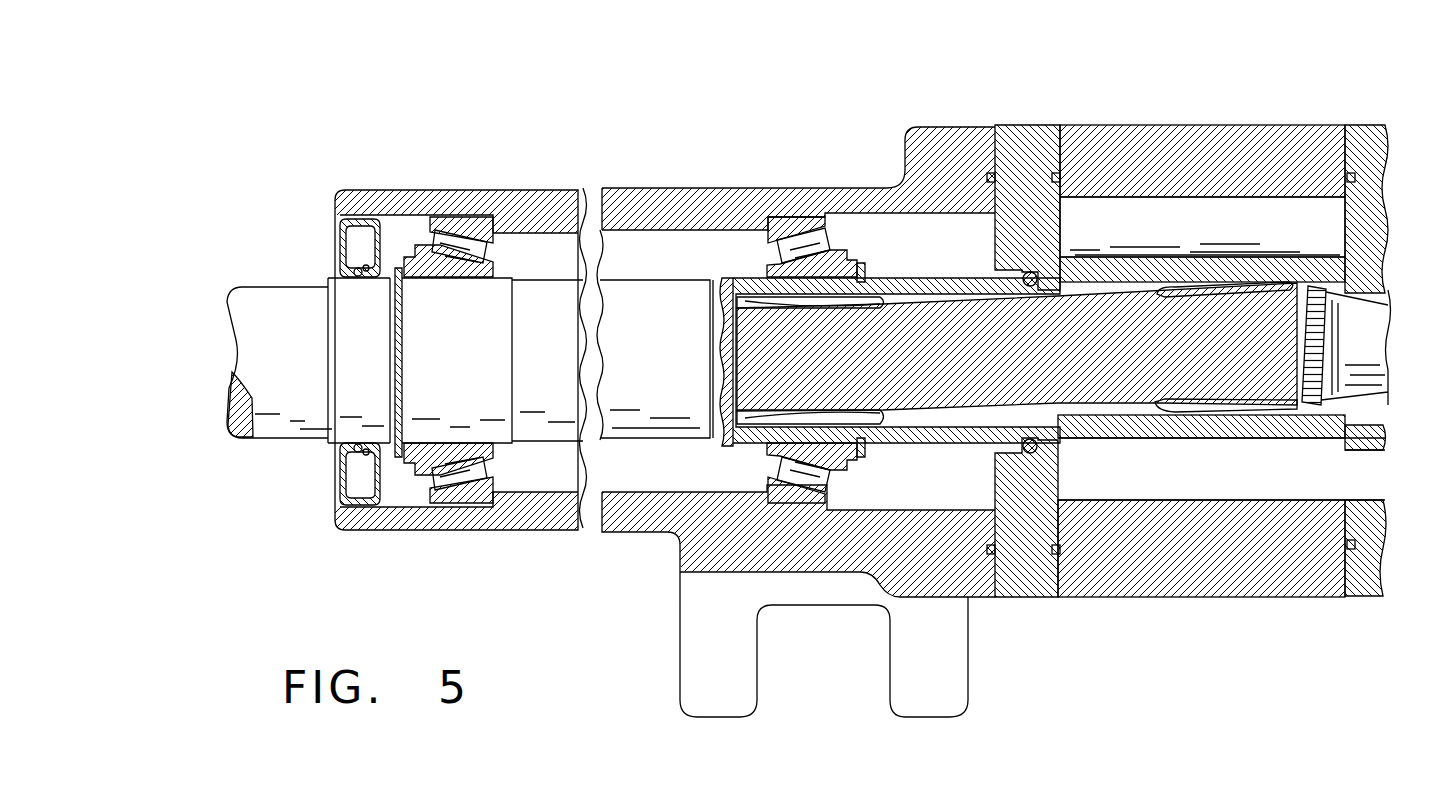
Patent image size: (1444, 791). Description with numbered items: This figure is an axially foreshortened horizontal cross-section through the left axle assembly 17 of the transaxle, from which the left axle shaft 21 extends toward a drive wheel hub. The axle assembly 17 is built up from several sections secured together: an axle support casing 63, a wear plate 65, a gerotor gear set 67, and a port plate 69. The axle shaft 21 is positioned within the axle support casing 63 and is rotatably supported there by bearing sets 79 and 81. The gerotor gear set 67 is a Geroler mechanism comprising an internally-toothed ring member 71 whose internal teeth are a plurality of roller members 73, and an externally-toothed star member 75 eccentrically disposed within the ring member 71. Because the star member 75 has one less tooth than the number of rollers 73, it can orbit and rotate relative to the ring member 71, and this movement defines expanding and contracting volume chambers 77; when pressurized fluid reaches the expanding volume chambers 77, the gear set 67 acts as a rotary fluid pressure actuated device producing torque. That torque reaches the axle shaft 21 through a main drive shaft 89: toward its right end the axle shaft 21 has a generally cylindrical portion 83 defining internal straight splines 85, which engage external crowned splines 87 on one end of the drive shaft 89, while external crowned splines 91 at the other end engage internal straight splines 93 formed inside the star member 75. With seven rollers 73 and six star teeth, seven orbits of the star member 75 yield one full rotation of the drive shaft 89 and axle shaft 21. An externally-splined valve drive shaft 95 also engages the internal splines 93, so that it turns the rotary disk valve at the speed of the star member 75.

The left axle assembly 17 is at (843, 152).
The left axle shaft 21 is at (287, 300).
The axle support casing 63 is at (722, 200).
The wear plate 65 is at (1032, 132).
The gerotor gear set 67 is at (1176, 107).
The port plate 69 is at (1373, 138).
The internally-toothed ring member 71 is at (1290, 138).
The roller members 73 is at (1202, 227).
The externally-toothed star member 75 is at (1336, 268).
The volume chambers 77 is at (1221, 469).
The bearing set 79 is at (488, 253).
The bearing set 81 is at (762, 249).
The cylindrical portion 83 is at (965, 290).
The internal straight splines 85 is at (872, 424).
The external crowned splines 87 is at (748, 305).
The main drive shaft 89 is at (1017, 347).
The external crowned splines 91 is at (1270, 288).
The internal straight splines 93 is at (1158, 405).
The valve drive shaft 95 is at (1365, 355).